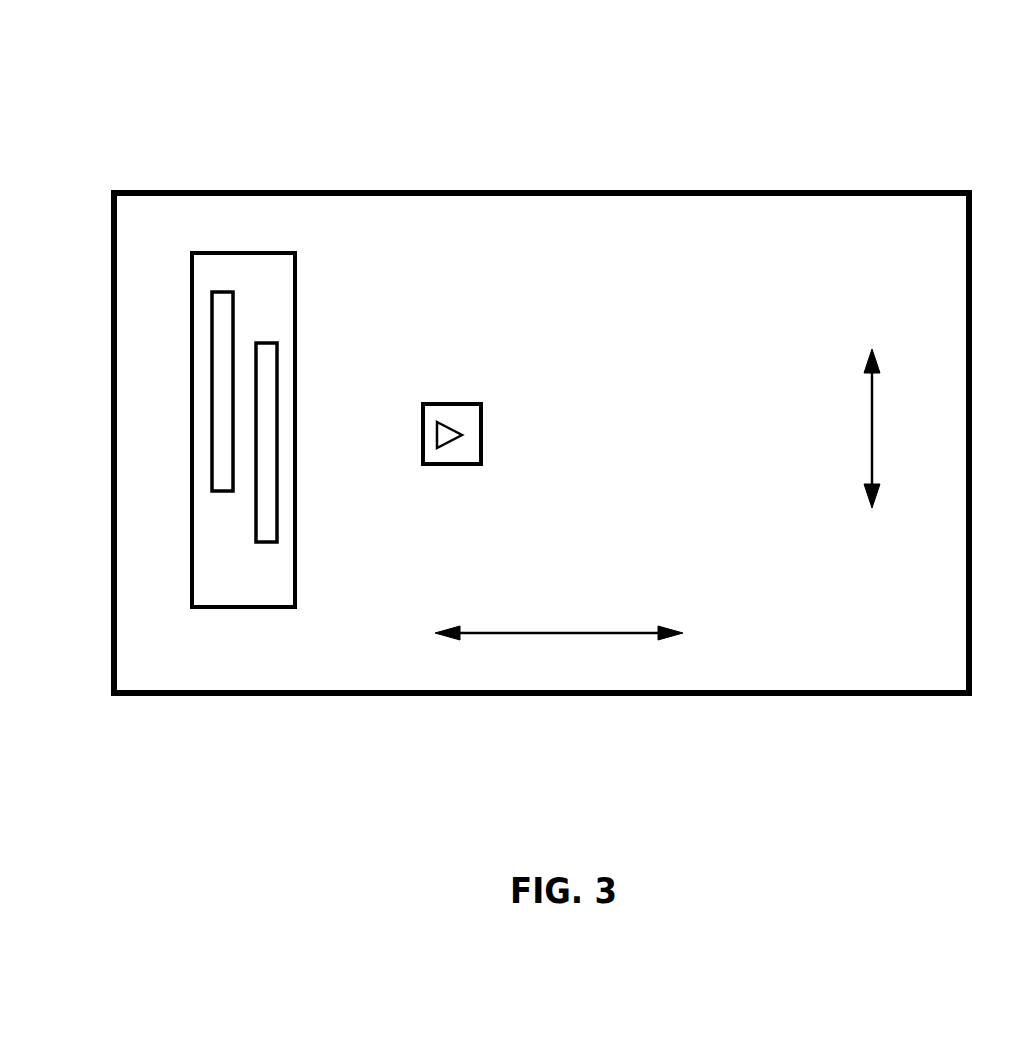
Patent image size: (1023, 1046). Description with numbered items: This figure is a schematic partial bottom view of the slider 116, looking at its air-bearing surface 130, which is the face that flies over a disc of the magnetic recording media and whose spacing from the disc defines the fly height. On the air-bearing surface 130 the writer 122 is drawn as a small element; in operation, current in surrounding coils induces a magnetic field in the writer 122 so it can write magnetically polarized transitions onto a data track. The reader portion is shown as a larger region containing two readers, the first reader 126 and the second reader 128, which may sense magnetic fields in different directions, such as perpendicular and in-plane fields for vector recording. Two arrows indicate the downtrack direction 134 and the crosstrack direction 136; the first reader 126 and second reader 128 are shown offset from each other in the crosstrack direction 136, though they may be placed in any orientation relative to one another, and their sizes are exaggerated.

The slider 116 is at (175, 48).
The writer 122 is at (442, 443).
The first reader 126 is at (220, 319).
The second reader 128 is at (265, 355).
The air-bearing surface 130 is at (576, 270).
The downtrack direction 134 is at (559, 614).
The crosstrack direction 136 is at (846, 428).